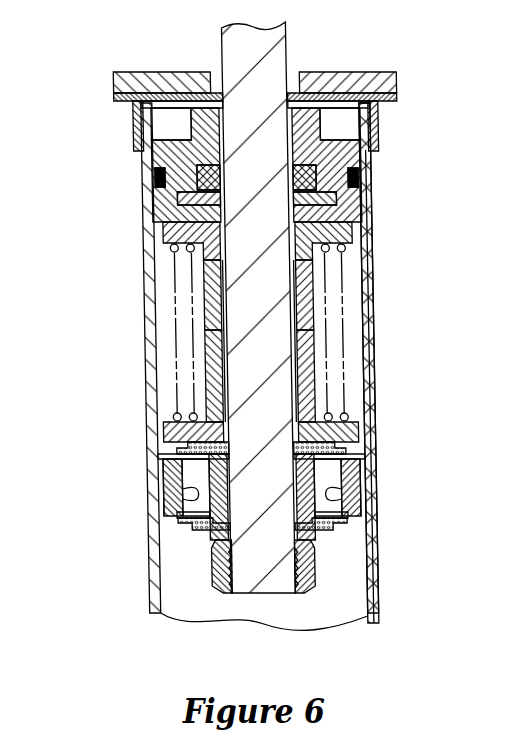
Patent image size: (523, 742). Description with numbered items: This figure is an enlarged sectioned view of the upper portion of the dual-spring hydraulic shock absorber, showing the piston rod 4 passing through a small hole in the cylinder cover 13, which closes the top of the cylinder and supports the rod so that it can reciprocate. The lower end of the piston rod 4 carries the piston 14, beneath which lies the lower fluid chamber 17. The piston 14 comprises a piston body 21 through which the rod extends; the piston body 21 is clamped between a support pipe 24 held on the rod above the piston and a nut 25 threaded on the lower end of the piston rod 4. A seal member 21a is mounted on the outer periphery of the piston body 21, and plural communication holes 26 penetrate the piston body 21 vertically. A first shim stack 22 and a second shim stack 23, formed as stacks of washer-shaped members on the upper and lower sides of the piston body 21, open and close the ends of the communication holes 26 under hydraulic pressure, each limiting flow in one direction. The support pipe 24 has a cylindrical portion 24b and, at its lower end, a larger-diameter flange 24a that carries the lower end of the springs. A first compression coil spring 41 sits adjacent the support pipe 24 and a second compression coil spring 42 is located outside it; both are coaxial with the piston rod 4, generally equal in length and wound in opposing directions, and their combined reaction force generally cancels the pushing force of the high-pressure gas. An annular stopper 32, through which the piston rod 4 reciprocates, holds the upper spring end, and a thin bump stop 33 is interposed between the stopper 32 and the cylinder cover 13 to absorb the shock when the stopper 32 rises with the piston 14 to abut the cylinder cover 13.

The piston rod 4 is at (289, 40).
The cylinder cover 13 is at (345, 160).
The piston 14 is at (320, 527).
The lower fluid chamber 17 is at (341, 614).
The piston body 21 is at (151, 530).
The seal member 21a is at (155, 480).
The first shim stack 22 is at (188, 530).
The second shim stack 23 is at (160, 452).
The support pipe 24 is at (328, 351).
The flange 24a is at (345, 428).
The cylindrical portion 24b is at (300, 302).
The nut 25 is at (212, 582).
The communication holes 26 is at (155, 502).
The stopper 32 is at (341, 227).
The bump stop 33 is at (346, 211).
The first compression coil spring 41 is at (321, 331).
The second compression coil spring 42 is at (338, 379).